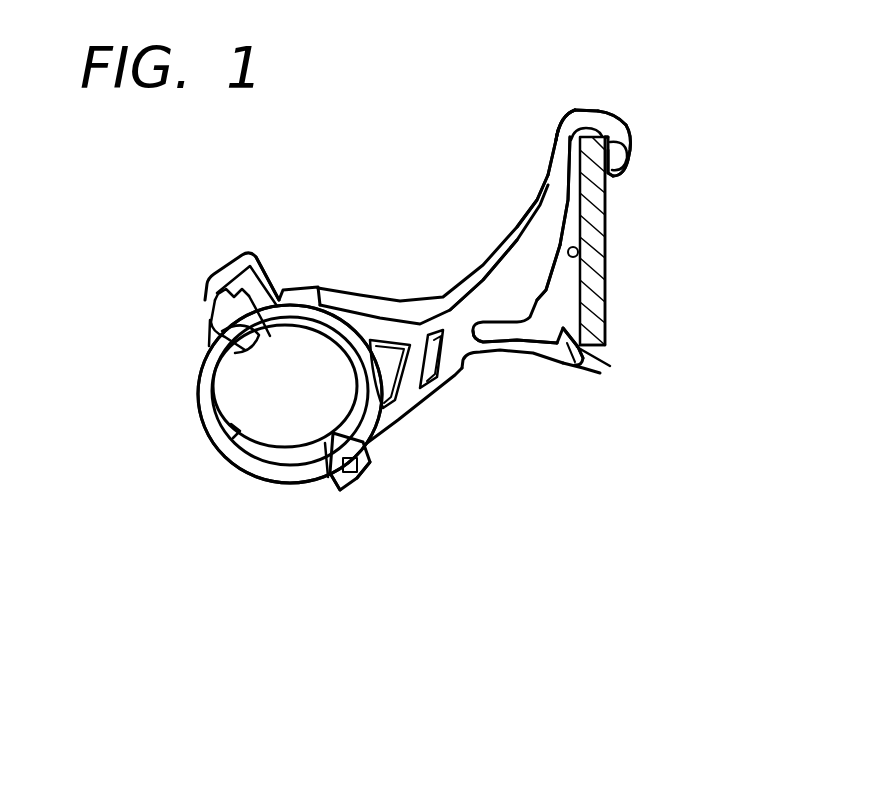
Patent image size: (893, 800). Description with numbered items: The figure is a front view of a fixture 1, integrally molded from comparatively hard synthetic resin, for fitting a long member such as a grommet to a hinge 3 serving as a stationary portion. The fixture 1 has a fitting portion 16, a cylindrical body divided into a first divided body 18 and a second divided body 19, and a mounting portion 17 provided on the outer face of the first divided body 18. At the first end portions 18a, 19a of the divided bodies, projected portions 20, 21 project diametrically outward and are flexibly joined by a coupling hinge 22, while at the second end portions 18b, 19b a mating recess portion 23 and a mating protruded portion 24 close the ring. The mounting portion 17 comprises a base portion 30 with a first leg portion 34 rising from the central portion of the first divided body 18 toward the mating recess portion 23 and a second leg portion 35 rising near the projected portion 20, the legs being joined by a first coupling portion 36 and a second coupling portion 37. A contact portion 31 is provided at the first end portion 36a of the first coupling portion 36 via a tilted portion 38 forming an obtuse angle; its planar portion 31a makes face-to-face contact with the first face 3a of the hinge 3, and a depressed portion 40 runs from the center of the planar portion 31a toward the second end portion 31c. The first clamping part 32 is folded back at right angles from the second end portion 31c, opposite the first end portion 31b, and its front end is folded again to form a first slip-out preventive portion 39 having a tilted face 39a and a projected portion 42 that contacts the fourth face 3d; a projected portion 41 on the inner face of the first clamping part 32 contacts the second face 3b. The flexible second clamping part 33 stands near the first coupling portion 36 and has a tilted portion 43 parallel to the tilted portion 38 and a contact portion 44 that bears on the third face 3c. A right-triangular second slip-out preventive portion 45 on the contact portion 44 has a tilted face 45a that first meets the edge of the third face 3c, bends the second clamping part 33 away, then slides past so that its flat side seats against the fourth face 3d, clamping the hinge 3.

The fixture 1 is at (163, 261).
The hinge 3 is at (612, 272).
The first face 3a is at (580, 253).
The second face 3b is at (565, 116).
The third face 3c is at (593, 347).
The fourth face 3d is at (607, 303).
The fitting portion 16 is at (200, 407).
The mounting portion 17 is at (541, 184).
The first divided body 18 is at (250, 270).
The first end portion of first divided body 18a is at (373, 447).
The second end portion of first divided body 18b is at (214, 262).
The second divided body 19 is at (203, 376).
The first end portion of second divided body 19a is at (303, 478).
The second end portion of second divided body 19b is at (235, 362).
The projected portion 20 is at (365, 467).
The projected portion 21 is at (330, 483).
The coupling hinge 22 is at (357, 480).
The mating recess portion 23 is at (215, 267).
The mating protruded portion 24 is at (209, 320).
The base portion 30 is at (308, 278).
The contact portion 31 is at (530, 230).
The planar portion 31a is at (562, 226).
The first end portion of contact portion 31b is at (500, 317).
The second end portion of contact portion 31c is at (575, 111).
The first clamping part 32 is at (592, 131).
The second clamping part 33 is at (567, 367).
The first leg portion 34 is at (342, 298).
The second leg portion 35 is at (417, 413).
The first coupling portion 36 is at (457, 367).
The first end portion of first coupling portion 36a is at (443, 292).
The second coupling portion 37 is at (417, 380).
The tilted portion 38 is at (460, 327).
The first slip-out preventive portion 39 is at (636, 149).
The tilted face 39a is at (614, 179).
The depressed portion 40 is at (555, 142).
The projected portion 41 is at (606, 128).
The projected portion 42 is at (623, 137).
The tilted portion 43 is at (487, 347).
The contact portion 44 is at (528, 350).
The second slip-out preventive portion 45 is at (585, 358).
The tilted face 45a is at (583, 364).